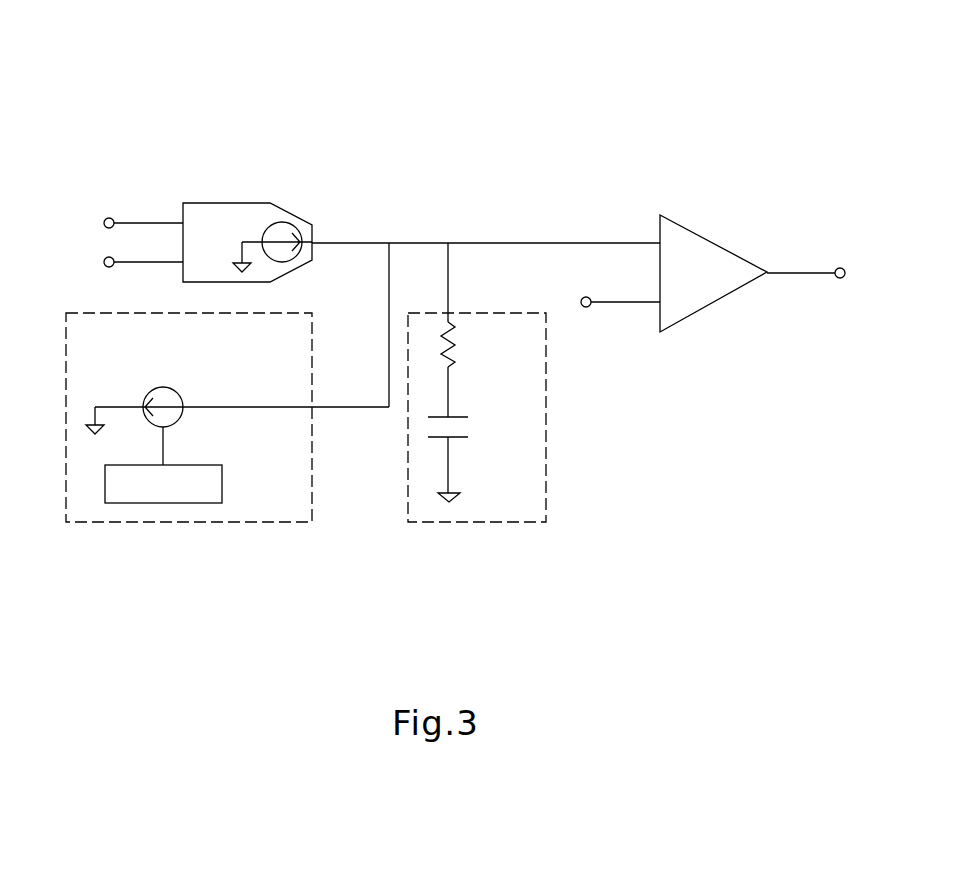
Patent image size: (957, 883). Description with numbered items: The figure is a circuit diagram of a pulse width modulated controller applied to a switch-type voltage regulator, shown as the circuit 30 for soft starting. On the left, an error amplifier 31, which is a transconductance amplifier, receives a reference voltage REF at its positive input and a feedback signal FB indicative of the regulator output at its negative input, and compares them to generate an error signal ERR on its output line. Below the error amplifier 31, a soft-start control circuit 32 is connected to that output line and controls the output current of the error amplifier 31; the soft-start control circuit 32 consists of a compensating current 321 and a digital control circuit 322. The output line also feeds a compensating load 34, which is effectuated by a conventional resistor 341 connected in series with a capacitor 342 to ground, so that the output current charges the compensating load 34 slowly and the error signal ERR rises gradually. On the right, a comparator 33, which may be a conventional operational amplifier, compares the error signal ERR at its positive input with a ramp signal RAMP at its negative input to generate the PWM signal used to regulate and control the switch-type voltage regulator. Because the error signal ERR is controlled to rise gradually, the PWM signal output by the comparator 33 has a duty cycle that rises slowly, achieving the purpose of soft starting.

The circuit 30 is at (633, 60).
The error amplifier 31 is at (354, 143).
The soft-start control circuit 32 is at (327, 461).
The compensating current 321 is at (236, 394).
The digital control circuit 322 is at (236, 479).
The comparator 33 is at (721, 217).
The compensating load 34 is at (570, 402).
The resistor 341 is at (471, 344).
The capacitor 342 is at (482, 431).